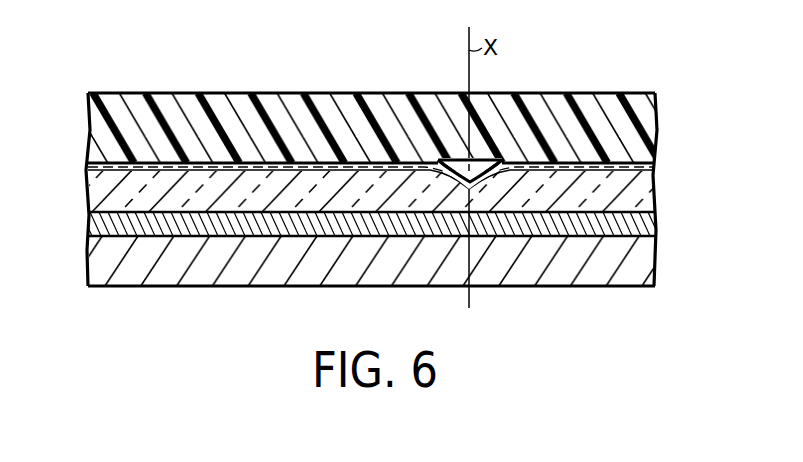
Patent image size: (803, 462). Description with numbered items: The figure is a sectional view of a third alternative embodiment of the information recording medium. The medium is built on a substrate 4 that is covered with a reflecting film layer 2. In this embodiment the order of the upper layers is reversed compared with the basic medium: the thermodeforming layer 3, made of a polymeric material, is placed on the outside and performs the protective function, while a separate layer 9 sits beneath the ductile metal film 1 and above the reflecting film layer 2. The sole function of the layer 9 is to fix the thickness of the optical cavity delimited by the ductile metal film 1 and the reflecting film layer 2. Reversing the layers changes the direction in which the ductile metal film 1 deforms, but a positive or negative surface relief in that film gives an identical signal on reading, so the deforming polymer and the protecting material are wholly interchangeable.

The thermodeforming layer 3 is at (88, 130).
The ductile metal film 1 is at (88, 159).
The layer fixing optical cavity thickness 9 is at (656, 184).
The reflecting film layer 2 is at (90, 226).
The substrate 4 is at (90, 267).